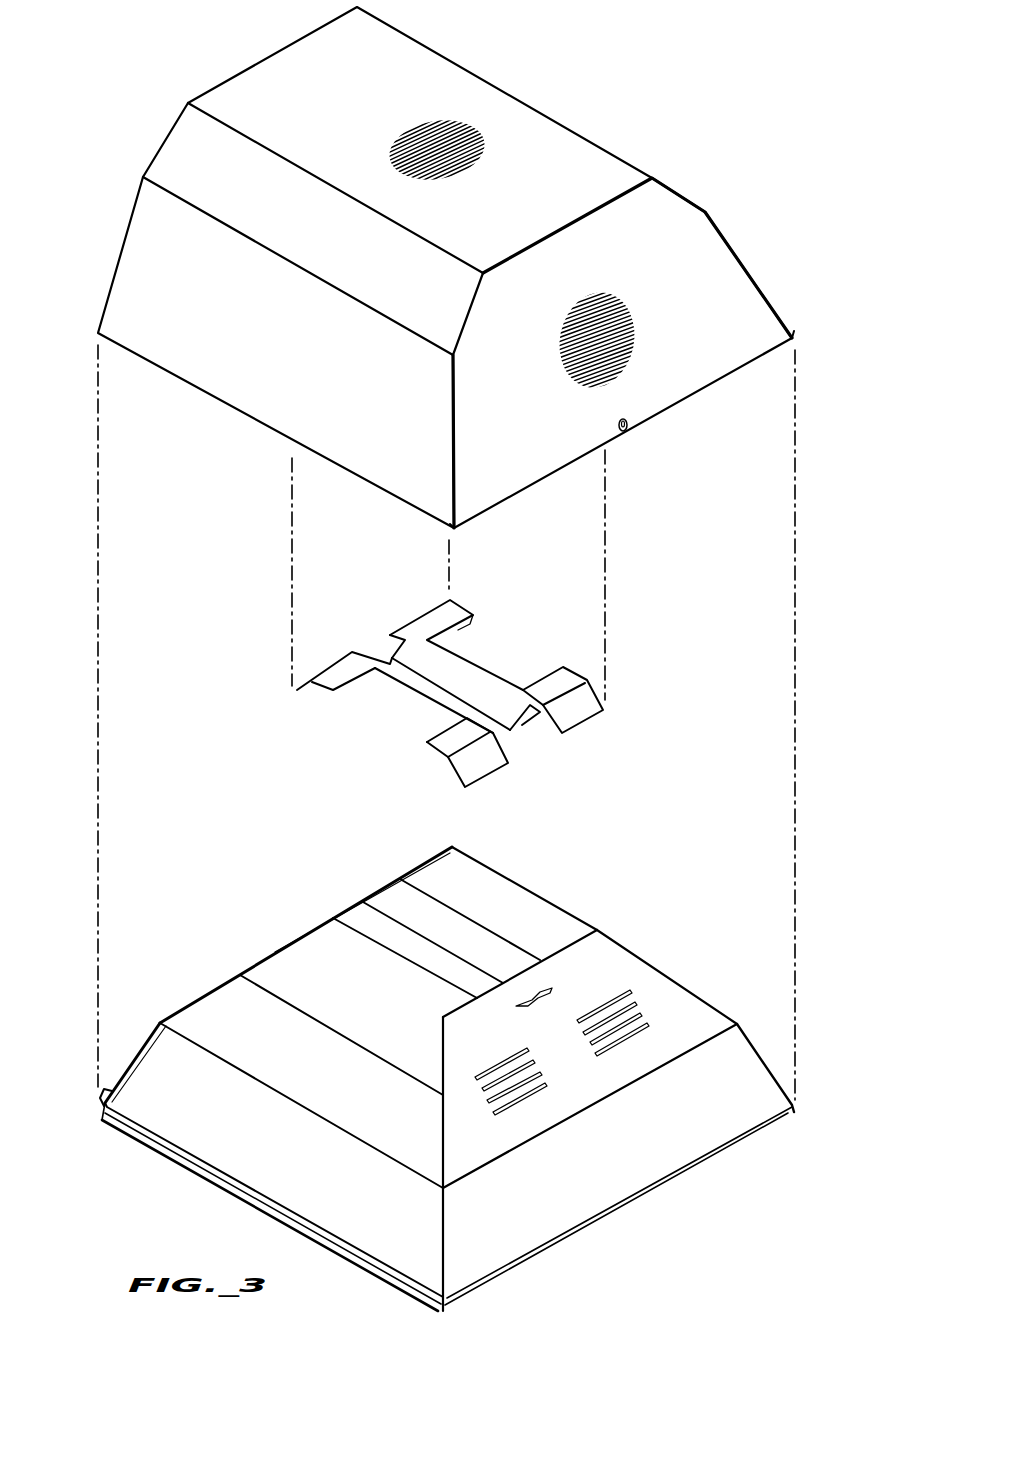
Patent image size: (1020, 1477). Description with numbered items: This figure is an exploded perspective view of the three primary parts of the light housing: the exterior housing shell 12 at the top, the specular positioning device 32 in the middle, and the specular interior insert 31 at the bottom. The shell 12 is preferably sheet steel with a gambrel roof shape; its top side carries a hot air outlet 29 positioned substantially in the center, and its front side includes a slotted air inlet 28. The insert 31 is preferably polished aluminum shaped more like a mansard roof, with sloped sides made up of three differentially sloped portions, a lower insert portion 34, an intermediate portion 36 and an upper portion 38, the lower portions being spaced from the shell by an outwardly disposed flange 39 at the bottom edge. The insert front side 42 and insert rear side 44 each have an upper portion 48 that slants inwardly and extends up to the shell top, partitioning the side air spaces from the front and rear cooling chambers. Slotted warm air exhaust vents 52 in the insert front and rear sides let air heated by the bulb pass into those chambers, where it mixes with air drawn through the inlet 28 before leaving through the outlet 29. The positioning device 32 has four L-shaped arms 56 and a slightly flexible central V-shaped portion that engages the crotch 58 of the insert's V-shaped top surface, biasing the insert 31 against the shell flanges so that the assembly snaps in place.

The exterior housing shell 12 is at (637, 145).
The slotted air inlet 28 is at (633, 320).
The hot air outlet 29 is at (410, 136).
The specular interior insert 31 is at (457, 1081).
The specular positioning device 32 is at (456, 693).
The lower insert portion 34 is at (190, 1125).
The intermediate sloped portion 36 is at (330, 1105).
The upper sloped portion 38 is at (307, 995).
The outwardly disposed flange 39 is at (387, 1277).
The insert front side 42 is at (599, 1183).
The insert rear side 44 is at (126, 1048).
The upper portion 48 is at (685, 1018).
The slotted warm air exhaust vent 52 is at (523, 1097).
The L-shaped arm 56 is at (455, 622).
The crotch 58 is at (443, 682).